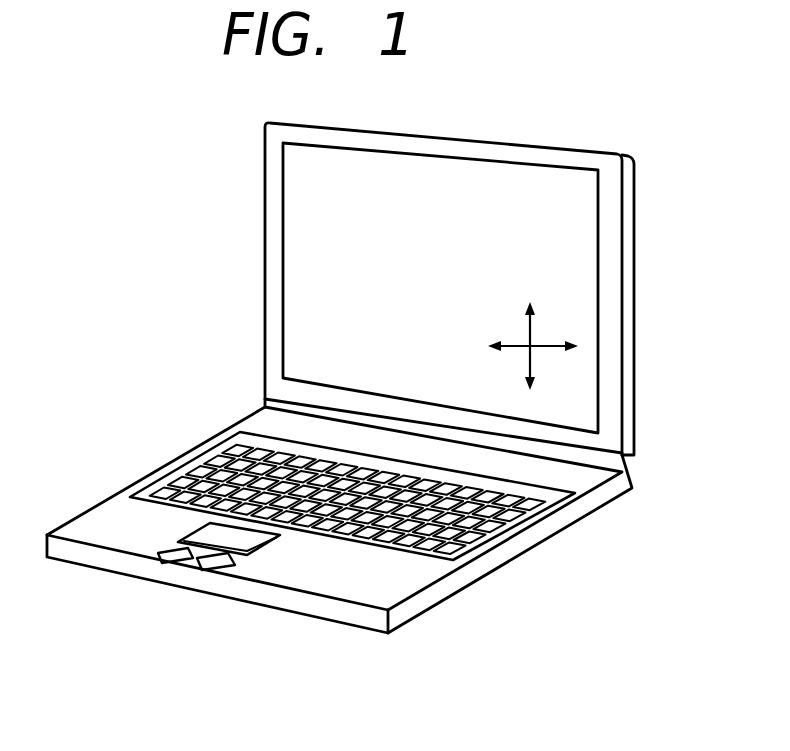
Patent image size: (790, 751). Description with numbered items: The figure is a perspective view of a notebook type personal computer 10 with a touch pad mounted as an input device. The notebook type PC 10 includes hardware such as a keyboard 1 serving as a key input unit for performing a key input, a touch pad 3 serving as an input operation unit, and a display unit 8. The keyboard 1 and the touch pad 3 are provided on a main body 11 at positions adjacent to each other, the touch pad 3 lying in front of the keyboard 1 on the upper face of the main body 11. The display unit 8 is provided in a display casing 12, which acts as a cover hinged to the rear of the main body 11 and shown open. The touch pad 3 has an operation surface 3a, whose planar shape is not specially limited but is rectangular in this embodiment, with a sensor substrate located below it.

The notebook type personal computer 10 is at (153, 208).
The main body 11 is at (529, 549).
The display casing 12 is at (635, 253).
The display unit 8 is at (458, 177).
The keyboard 1 is at (162, 469).
The touch pad 3 is at (257, 565).
The operation surface 3a is at (177, 536).